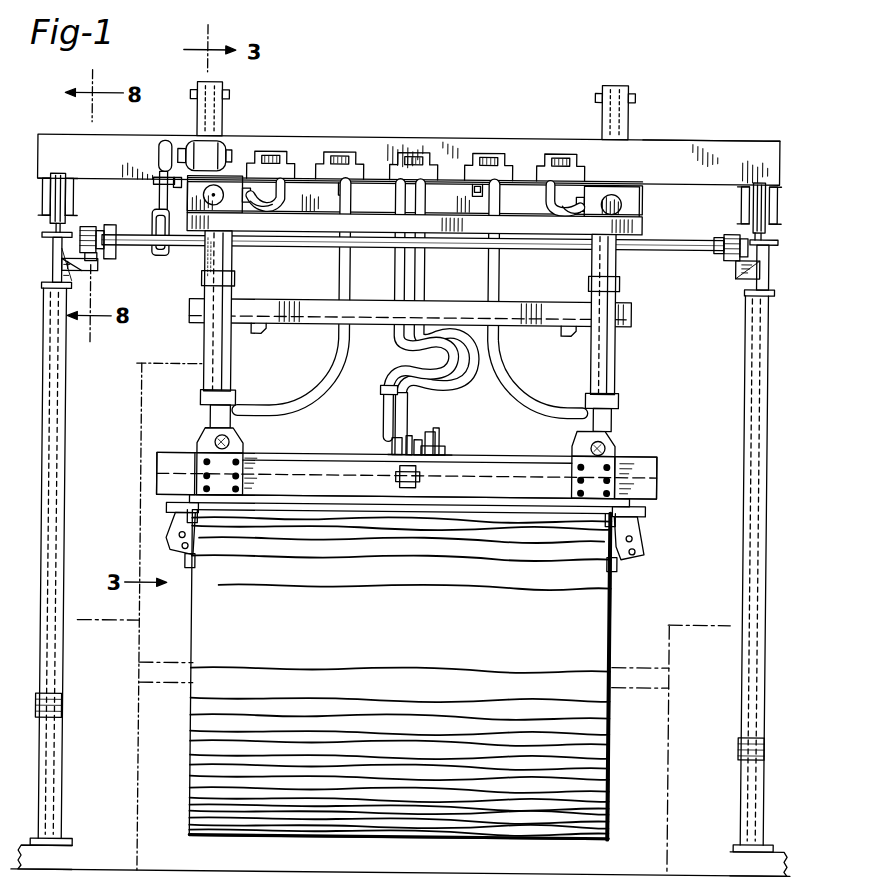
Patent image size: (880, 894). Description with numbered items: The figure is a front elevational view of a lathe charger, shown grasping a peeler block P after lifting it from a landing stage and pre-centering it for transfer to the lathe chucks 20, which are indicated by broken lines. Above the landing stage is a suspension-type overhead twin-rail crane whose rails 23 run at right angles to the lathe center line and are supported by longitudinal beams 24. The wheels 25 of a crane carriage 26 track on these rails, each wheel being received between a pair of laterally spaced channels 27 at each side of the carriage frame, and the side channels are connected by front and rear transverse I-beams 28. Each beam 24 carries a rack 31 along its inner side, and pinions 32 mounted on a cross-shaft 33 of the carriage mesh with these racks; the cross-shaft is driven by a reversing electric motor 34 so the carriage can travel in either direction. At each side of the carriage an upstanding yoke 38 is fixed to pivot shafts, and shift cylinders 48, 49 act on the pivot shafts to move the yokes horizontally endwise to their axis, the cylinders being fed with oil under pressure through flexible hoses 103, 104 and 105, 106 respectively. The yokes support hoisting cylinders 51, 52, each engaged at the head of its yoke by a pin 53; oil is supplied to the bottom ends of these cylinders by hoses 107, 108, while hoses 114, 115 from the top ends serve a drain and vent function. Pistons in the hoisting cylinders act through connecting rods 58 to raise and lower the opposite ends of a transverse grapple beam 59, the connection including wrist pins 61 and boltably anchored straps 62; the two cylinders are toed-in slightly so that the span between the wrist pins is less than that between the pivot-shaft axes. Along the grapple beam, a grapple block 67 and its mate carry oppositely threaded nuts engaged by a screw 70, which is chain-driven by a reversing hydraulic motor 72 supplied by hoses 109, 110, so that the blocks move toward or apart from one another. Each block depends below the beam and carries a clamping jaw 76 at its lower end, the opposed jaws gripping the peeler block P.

The lathe chucks 20 is at (166, 664).
The rails 23 is at (48, 236).
The longitudinal beams 24 is at (42, 284).
The wheels 25 is at (56, 176).
The crane carriage 26 is at (650, 141).
The channels 27 is at (40, 200).
The transverse I-beams 28 is at (728, 146).
The rack 31 is at (90, 264).
The pinions 32 is at (88, 232).
The cross-shaft 33 is at (670, 249).
The reversing electric motor 34 is at (193, 150).
The yoke 38 is at (223, 112).
The oil cylinder 48 is at (216, 193).
The oil cylinder 49 is at (611, 192).
The hoisting cylinder 51 is at (206, 345).
The hoisting cylinder 52 is at (609, 372).
The pin 53 is at (632, 99).
The connecting rods 58 is at (210, 426).
The transverse grapple beam 59 is at (376, 453).
The wrist pins 61 is at (230, 443).
The straps 62 is at (208, 447).
The grapple block 67 is at (167, 511).
The screw 70 is at (470, 472).
The reversing hydraulic motor 72 is at (437, 432).
The clamping jaw 76 is at (193, 570).
The flexible hose 103 is at (268, 193).
The flexible hose 104 is at (262, 210).
The flexible hose 105 is at (543, 195).
The flexible hose 106 is at (556, 210).
The flexible hose 107 is at (270, 405).
The flexible hose 108 is at (533, 411).
The flexible hose 109 is at (396, 290).
The flexible hose 110 is at (424, 290).
The hose 114 is at (345, 196).
The hose 115 is at (472, 195).
The peeler block P is at (188, 780).